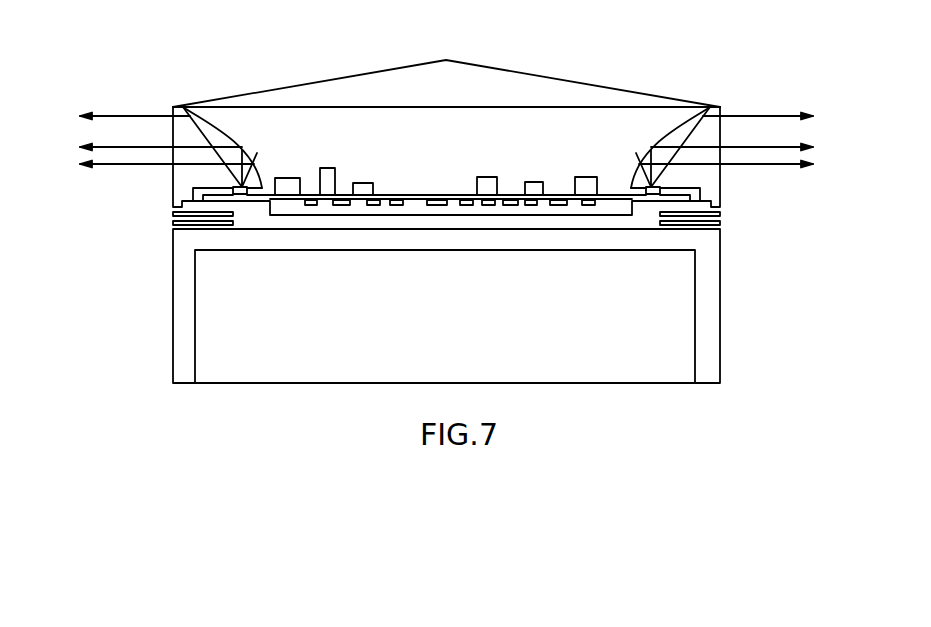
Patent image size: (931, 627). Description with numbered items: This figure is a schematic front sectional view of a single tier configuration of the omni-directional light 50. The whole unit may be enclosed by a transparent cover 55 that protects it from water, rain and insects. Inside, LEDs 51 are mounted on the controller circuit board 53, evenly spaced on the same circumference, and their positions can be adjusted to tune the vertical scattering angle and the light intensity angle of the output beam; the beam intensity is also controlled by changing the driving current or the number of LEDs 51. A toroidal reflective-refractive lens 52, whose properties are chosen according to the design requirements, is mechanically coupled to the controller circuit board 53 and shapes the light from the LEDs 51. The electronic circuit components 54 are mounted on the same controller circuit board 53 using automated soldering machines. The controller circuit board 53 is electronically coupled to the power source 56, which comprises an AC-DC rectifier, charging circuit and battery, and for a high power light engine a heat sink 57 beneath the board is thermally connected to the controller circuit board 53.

The omni-directional light 50 is at (267, 78).
The LEDs 51 is at (232, 195).
The toroidal reflective-refractive lens 52 is at (227, 140).
The controller circuit board 53 is at (382, 192).
The electronic circuit components 54 is at (487, 176).
The transparent cover 55 is at (722, 170).
The power source 56 is at (608, 268).
The heat sink 57 is at (645, 219).